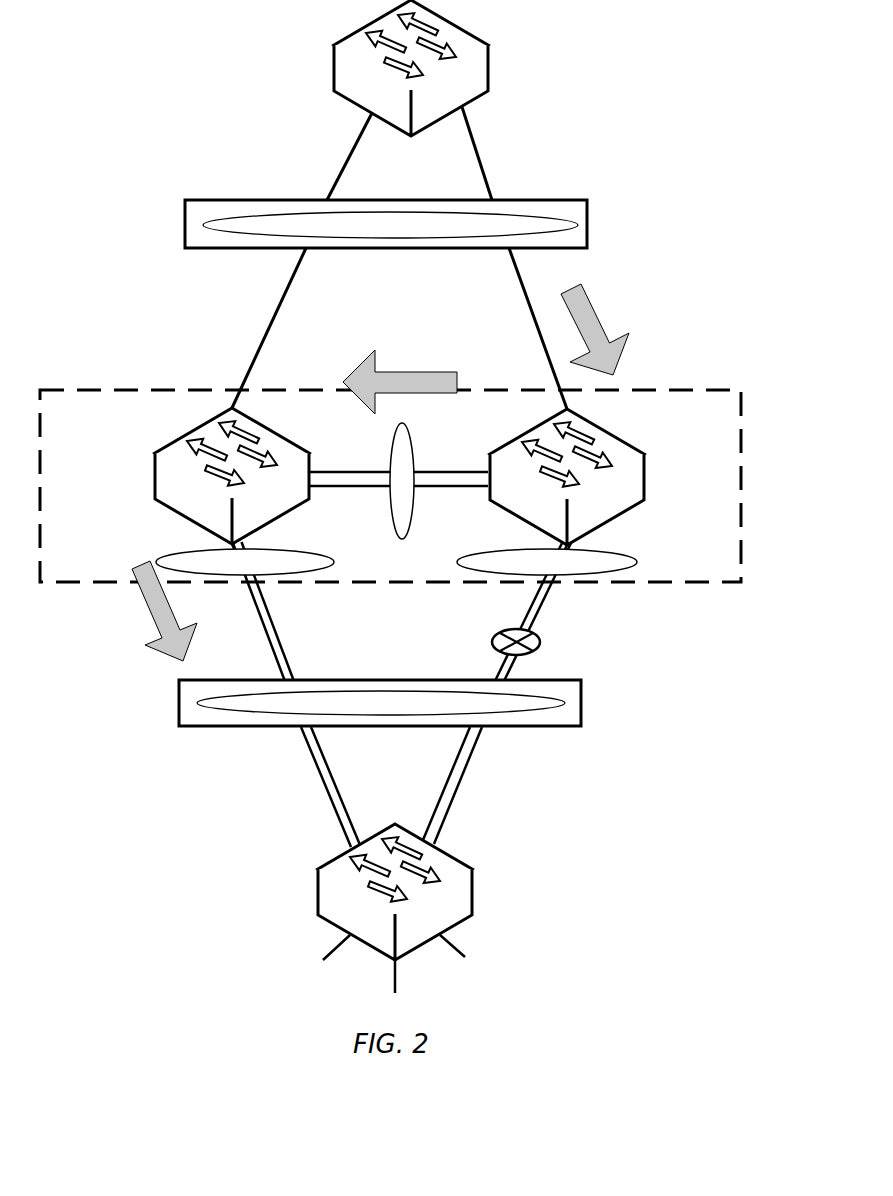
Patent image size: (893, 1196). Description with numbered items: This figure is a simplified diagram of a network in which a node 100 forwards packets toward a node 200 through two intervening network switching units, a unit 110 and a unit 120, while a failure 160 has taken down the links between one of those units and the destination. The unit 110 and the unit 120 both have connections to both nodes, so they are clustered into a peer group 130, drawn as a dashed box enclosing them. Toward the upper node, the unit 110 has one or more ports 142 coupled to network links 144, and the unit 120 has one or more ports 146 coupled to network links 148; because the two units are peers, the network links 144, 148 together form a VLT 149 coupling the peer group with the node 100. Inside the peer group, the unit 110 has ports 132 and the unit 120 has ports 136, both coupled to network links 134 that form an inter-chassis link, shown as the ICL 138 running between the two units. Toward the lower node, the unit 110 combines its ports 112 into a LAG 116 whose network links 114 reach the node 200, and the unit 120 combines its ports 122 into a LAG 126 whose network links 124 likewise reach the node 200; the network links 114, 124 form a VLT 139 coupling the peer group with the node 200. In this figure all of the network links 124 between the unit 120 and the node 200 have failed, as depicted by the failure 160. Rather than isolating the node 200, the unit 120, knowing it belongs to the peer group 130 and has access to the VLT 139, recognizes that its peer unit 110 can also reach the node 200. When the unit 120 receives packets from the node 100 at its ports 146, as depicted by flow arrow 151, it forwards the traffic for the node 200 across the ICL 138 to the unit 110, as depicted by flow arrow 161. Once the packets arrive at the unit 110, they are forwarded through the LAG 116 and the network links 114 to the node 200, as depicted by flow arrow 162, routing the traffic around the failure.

The node 100 is at (455, 68).
The node 200 is at (447, 908).
The unit 110 is at (188, 476).
The unit 120 is at (605, 477).
The peer group 130 is at (742, 501).
The VLT 149 is at (386, 224).
The VLT 139 is at (380, 703).
The link aggregation group 116 is at (245, 562).
The LAG 126 is at (547, 562).
The network links 144 is at (347, 160).
The network links 148 is at (475, 150).
The ports 142 is at (227, 407).
The ports 146 is at (572, 408).
The ports 132 is at (312, 462).
The network links 134 is at (360, 490).
The ports 136 is at (485, 465).
The ICL 138 is at (412, 525).
The ports 112 is at (173, 544).
The ports 122 is at (587, 543).
The network links 114 is at (263, 630).
The network links 124 is at (460, 782).
The failure 160 is at (543, 642).
The flow arrow 151 is at (593, 308).
The flow arrow 161 is at (398, 370).
The flow arrow 162 is at (132, 582).